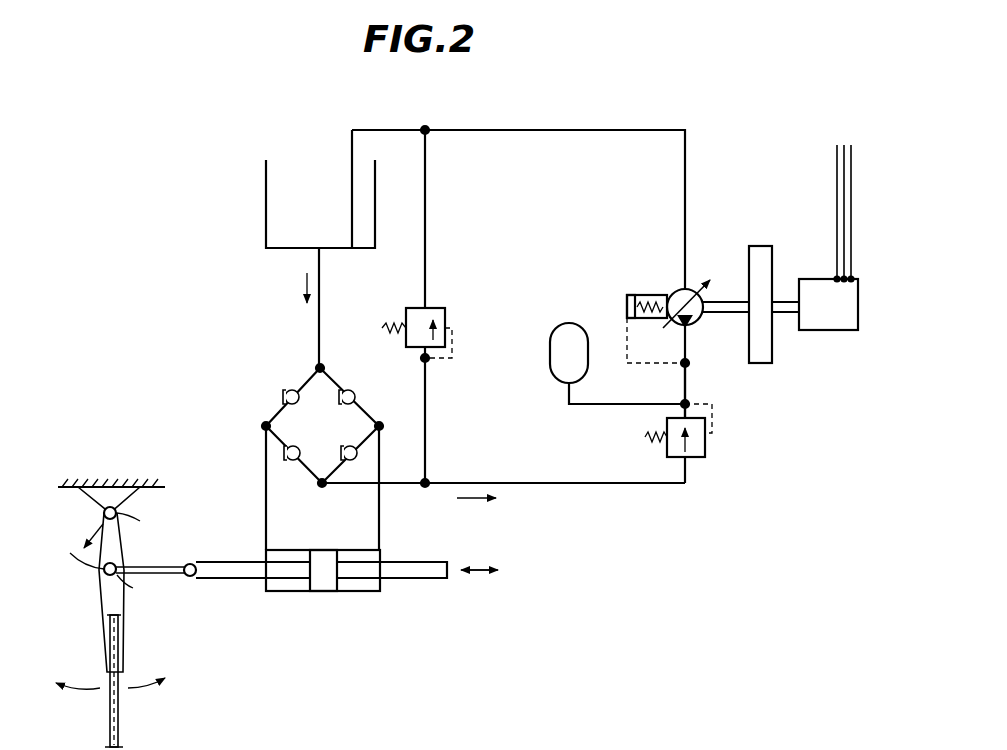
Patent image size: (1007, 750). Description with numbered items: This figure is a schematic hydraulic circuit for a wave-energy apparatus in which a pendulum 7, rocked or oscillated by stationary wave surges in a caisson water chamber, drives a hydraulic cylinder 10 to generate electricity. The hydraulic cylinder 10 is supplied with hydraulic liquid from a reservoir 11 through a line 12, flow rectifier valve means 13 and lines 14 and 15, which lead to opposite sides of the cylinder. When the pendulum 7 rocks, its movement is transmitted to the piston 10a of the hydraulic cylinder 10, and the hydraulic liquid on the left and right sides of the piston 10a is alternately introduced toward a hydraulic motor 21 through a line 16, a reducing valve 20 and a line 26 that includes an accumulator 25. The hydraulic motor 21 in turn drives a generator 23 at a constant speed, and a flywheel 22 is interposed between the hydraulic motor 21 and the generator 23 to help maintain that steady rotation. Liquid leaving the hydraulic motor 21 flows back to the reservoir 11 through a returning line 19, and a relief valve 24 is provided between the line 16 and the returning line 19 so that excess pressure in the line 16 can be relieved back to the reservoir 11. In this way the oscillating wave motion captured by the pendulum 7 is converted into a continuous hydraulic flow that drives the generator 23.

The pendulum 7 is at (120, 648).
The hydraulic cylinder 10 is at (316, 594).
The piston 10a is at (325, 590).
The reservoir 11 is at (266, 196).
The line 12 is at (319, 308).
The flow rectifier valve means 13 is at (266, 404).
The line 14 is at (266, 500).
The line 15 is at (380, 516).
The line 16 is at (530, 483).
The returning line 19 is at (525, 129).
The reducing valve 20 is at (705, 455).
The hydraulic motor 21 is at (692, 280).
The flywheel 22 is at (772, 358).
The generator 23 is at (838, 330).
The relief valve 24 is at (444, 312).
The accumulator 25 is at (567, 323).
The line 26 is at (688, 385).